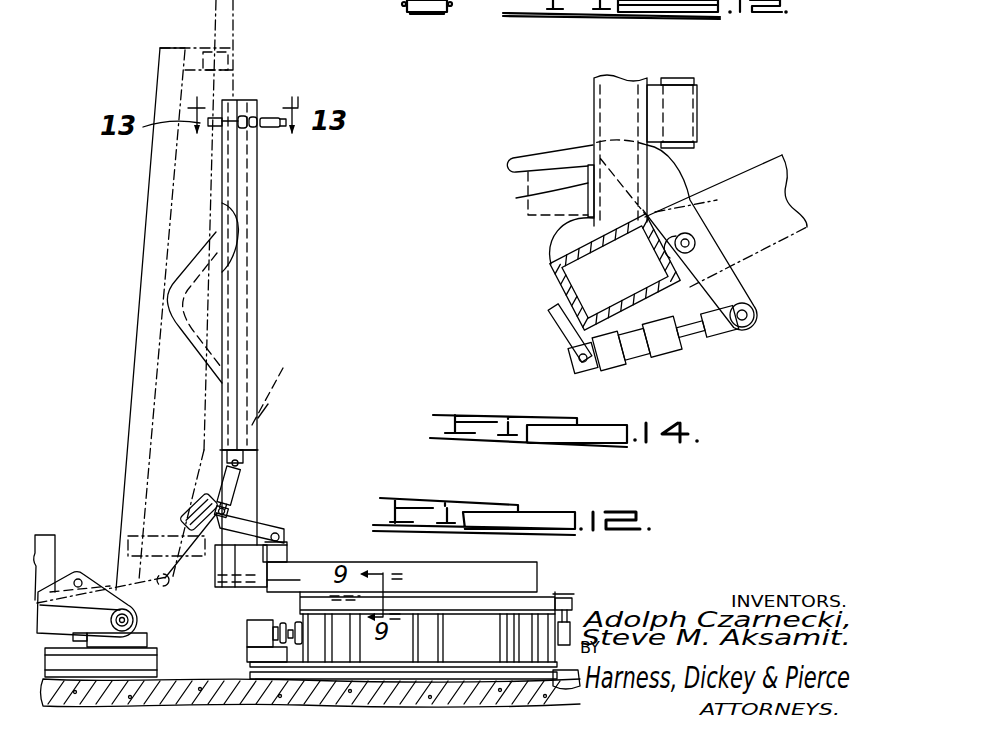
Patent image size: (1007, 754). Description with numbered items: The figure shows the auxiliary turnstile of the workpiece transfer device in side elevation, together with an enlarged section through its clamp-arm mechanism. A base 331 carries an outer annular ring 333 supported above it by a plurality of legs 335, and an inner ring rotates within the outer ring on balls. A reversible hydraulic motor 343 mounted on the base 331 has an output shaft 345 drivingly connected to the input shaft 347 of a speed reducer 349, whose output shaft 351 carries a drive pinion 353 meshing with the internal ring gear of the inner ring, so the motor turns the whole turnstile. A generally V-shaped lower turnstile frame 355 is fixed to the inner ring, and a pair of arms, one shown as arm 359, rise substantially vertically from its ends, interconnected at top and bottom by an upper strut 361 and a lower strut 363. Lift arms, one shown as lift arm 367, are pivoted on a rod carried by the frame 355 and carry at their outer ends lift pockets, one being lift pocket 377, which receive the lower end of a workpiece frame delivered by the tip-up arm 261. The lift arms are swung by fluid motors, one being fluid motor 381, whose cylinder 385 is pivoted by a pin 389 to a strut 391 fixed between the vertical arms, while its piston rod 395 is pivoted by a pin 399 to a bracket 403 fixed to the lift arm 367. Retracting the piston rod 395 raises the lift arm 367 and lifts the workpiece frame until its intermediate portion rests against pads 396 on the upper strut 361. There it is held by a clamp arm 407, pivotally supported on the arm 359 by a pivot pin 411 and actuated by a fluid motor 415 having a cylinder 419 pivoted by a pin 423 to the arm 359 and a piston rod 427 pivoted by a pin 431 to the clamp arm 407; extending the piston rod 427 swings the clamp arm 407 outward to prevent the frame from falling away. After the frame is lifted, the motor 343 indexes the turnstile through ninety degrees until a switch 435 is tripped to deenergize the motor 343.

In FIG. 12, the tip-up arm 261 is at (150, 165).
In FIG. 12, the base 331 is at (575, 687).
In FIG. 12, the outer annular ring 333 is at (550, 593).
In FIG. 12, the legs 335 is at (437, 662).
In FIG. 12, the reversible hydraulic motor 343 is at (253, 637).
In FIG. 12, the output shaft 345 is at (287, 623).
In FIG. 12, the input shaft 347 is at (293, 668).
In FIG. 12, the speed reducer 349 is at (315, 655).
In FIG. 12, the output shaft 351 is at (330, 598).
In FIG. 12, the drive pinion 353 is at (410, 577).
In FIG. 12, the lower turnstile frame 355 is at (448, 558).
In FIG. 12, the arm 359 is at (252, 480).
In FIG. 14, the arm 359 is at (553, 278).
In FIG. 12, the strut 361 is at (270, 100).
In FIG. 14, the strut 361 is at (650, 120).
In FIG. 12, the strut 363 is at (300, 567).
In FIG. 12, the lift arm 367 is at (290, 548).
In FIG. 12, the lift pocket 377 is at (183, 505).
In FIG. 12, the fluid motor 381 is at (241, 488).
In FIG. 12, the cylinder 385 is at (256, 451).
In FIG. 12, the pin 389 is at (268, 404).
In FIG. 12, the strut 391 is at (283, 370).
In FIG. 12, the piston rod 395 is at (233, 511).
In FIG. 14, the pads 396 is at (530, 198).
In FIG. 12, the pin 399 is at (143, 622).
In FIG. 12, the bracket 403 is at (262, 523).
In FIG. 12, the clamp arm 407 is at (202, 122).
In FIG. 14, the clamp arm 407 is at (703, 204).
In FIG. 14, the pivot pin 411 is at (692, 240).
In FIG. 12, the fluid motor 415 is at (254, 130).
In FIG. 14, the fluid motor 415 is at (635, 369).
In FIG. 14, the cylinder 419 is at (640, 356).
In FIG. 14, the pin 423 is at (585, 373).
In FIG. 14, the piston rod 427 is at (700, 340).
In FIG. 14, the pin 431 is at (756, 306).
In FIG. 12, the switch 435 is at (578, 610).